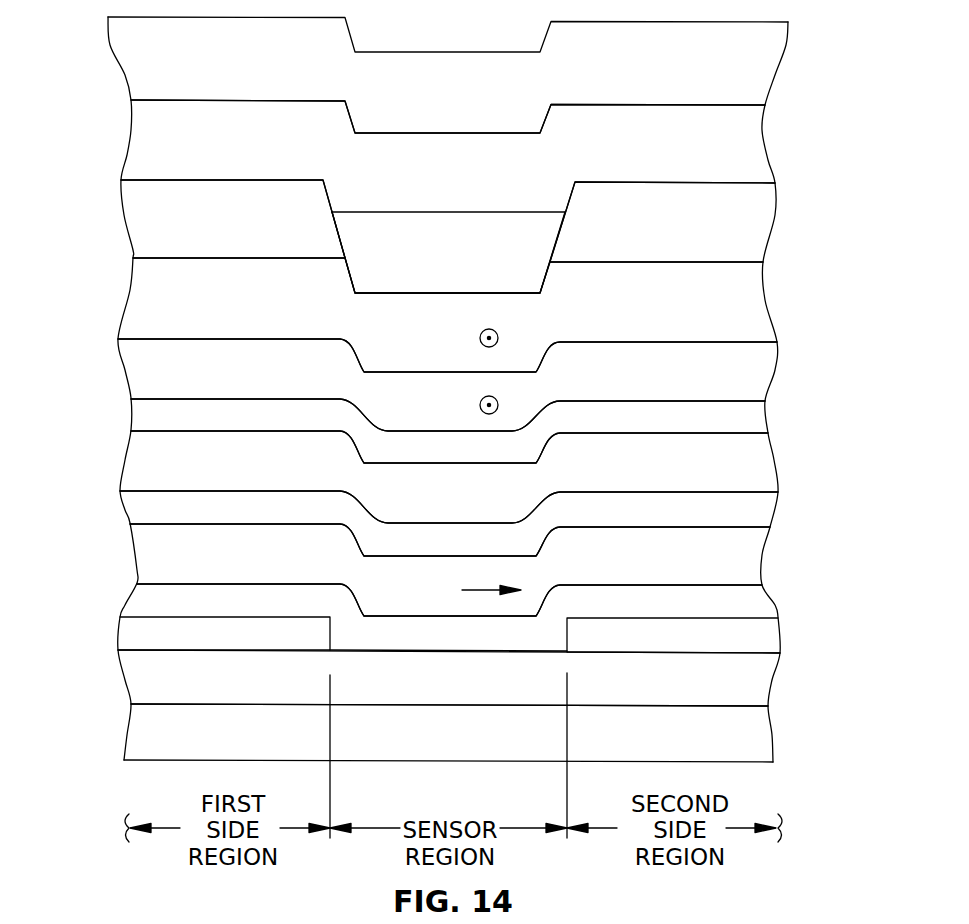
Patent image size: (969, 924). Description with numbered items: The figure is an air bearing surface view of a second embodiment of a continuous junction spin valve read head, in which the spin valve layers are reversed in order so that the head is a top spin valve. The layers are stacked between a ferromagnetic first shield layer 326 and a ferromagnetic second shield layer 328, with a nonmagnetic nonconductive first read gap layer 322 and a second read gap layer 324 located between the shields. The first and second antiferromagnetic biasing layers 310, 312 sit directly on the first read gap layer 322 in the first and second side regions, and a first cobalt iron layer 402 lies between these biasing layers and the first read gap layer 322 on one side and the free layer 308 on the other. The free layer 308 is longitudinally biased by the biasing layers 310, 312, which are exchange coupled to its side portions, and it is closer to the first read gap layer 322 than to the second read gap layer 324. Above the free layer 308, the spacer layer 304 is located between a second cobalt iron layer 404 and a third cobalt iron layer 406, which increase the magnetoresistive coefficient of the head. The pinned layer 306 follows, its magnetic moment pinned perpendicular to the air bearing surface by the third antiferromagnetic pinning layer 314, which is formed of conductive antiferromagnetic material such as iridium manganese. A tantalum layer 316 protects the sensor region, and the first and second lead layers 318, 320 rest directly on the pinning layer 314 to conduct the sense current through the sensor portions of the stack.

The second shield layer 328 is at (120, 43).
The second read gap layer 324 is at (133, 138).
The first lead layer 318 is at (125, 228).
The second lead layer 320 is at (757, 235).
The tantalum layer 316 is at (392, 228).
The third antiferromagnetic pinning layer 314 is at (130, 300).
The pinned layer 306 is at (127, 374).
The third cobalt iron layer 406 is at (131, 417).
The spacer layer 304 is at (128, 460).
The second cobalt iron layer 404 is at (128, 509).
The free layer 308 is at (138, 560).
The first cobalt iron layer 402 is at (128, 603).
The first antiferromagnetic biasing layer 310 is at (120, 636).
The second antiferromagnetic biasing layer 312 is at (770, 636).
The first read gap layer 322 is at (128, 680).
The first shield layer 326 is at (133, 732).